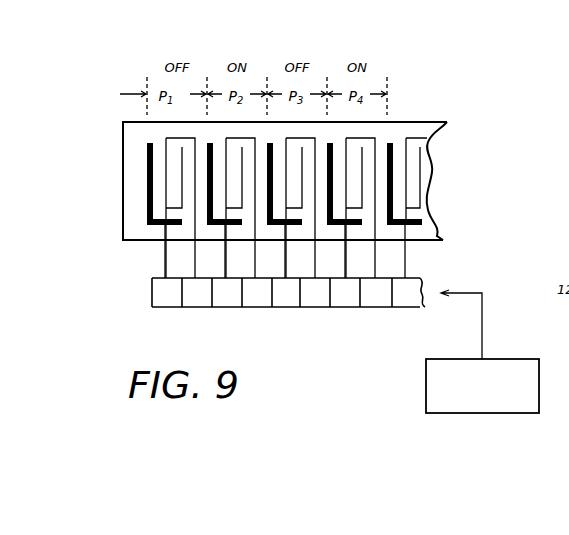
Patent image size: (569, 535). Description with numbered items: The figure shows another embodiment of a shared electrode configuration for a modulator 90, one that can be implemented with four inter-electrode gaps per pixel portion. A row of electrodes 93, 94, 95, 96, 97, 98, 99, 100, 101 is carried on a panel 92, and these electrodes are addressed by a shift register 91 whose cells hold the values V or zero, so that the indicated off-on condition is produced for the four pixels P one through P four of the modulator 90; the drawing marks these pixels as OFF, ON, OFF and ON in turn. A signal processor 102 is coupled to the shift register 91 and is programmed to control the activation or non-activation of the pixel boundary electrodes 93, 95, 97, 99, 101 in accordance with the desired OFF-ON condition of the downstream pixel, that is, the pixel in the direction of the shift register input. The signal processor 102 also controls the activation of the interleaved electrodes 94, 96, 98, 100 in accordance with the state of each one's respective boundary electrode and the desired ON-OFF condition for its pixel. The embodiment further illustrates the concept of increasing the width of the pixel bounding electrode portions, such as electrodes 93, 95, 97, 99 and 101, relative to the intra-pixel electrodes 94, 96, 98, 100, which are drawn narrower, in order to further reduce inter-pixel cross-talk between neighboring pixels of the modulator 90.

The modulator 90 is at (452, 182).
The shift register 91 is at (322, 308).
The panel 92 is at (133, 163).
The pixel boundary electrode 93 is at (163, 230).
The interleaved electrode 94 is at (193, 230).
The pixel boundary electrode 95 is at (224, 230).
The interleaved electrode 96 is at (253, 230).
The pixel boundary electrode 97 is at (283, 230).
The interleaved electrode 98 is at (313, 230).
The pixel boundary electrode 99 is at (343, 230).
The interleaved electrode 100 is at (373, 230).
The pixel boundary electrode 101 is at (406, 230).
The signal processor 102 is at (460, 413).